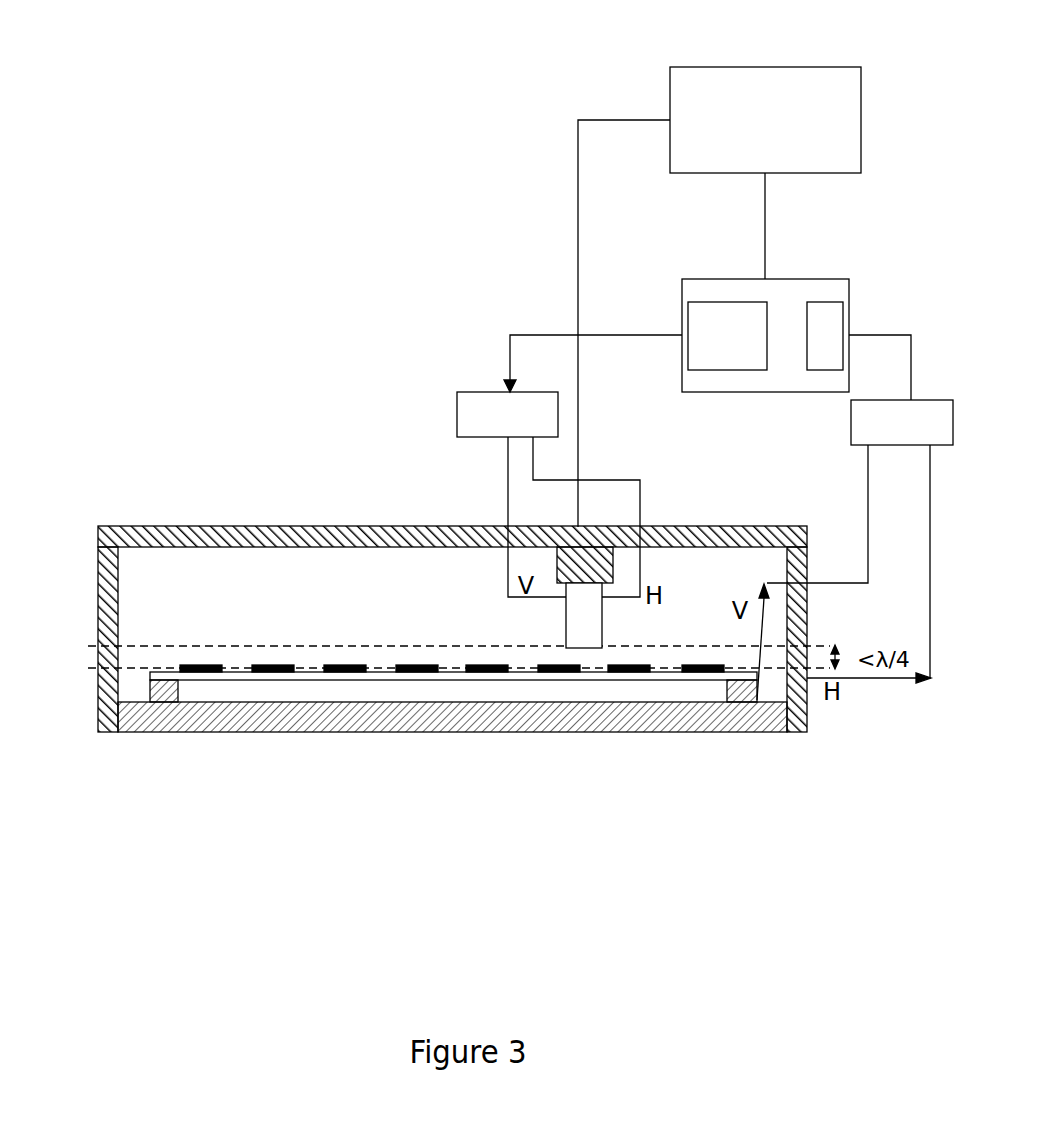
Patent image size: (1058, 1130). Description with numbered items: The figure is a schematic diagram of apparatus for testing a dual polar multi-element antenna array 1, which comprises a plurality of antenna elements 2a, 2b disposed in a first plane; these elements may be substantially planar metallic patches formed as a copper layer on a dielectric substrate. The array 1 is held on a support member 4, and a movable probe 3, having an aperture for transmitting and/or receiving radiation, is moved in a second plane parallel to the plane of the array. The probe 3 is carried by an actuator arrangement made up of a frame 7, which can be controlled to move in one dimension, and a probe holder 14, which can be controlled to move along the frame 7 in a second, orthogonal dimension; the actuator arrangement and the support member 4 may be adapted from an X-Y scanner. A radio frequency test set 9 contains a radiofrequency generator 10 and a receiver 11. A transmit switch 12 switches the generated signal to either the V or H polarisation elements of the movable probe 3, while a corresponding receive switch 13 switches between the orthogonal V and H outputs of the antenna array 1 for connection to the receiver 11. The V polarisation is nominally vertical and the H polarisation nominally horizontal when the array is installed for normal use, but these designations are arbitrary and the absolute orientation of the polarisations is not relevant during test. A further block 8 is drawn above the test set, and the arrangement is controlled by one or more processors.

The multi-element antenna array 1 is at (160, 673).
The antenna element 2a is at (195, 665).
The antenna element 2b is at (260, 665).
The movable probe 3 is at (562, 623).
The support member 4 is at (212, 733).
The frame 7 is at (200, 526).
The controller 8 is at (733, 67).
The radio frequency test set 9 is at (790, 279).
The radiofrequency generator 10 is at (745, 371).
The receiver 11 is at (828, 371).
The transmit switch 12 is at (457, 400).
The receive switch 13 is at (923, 400).
The probe holder 14 is at (557, 563).